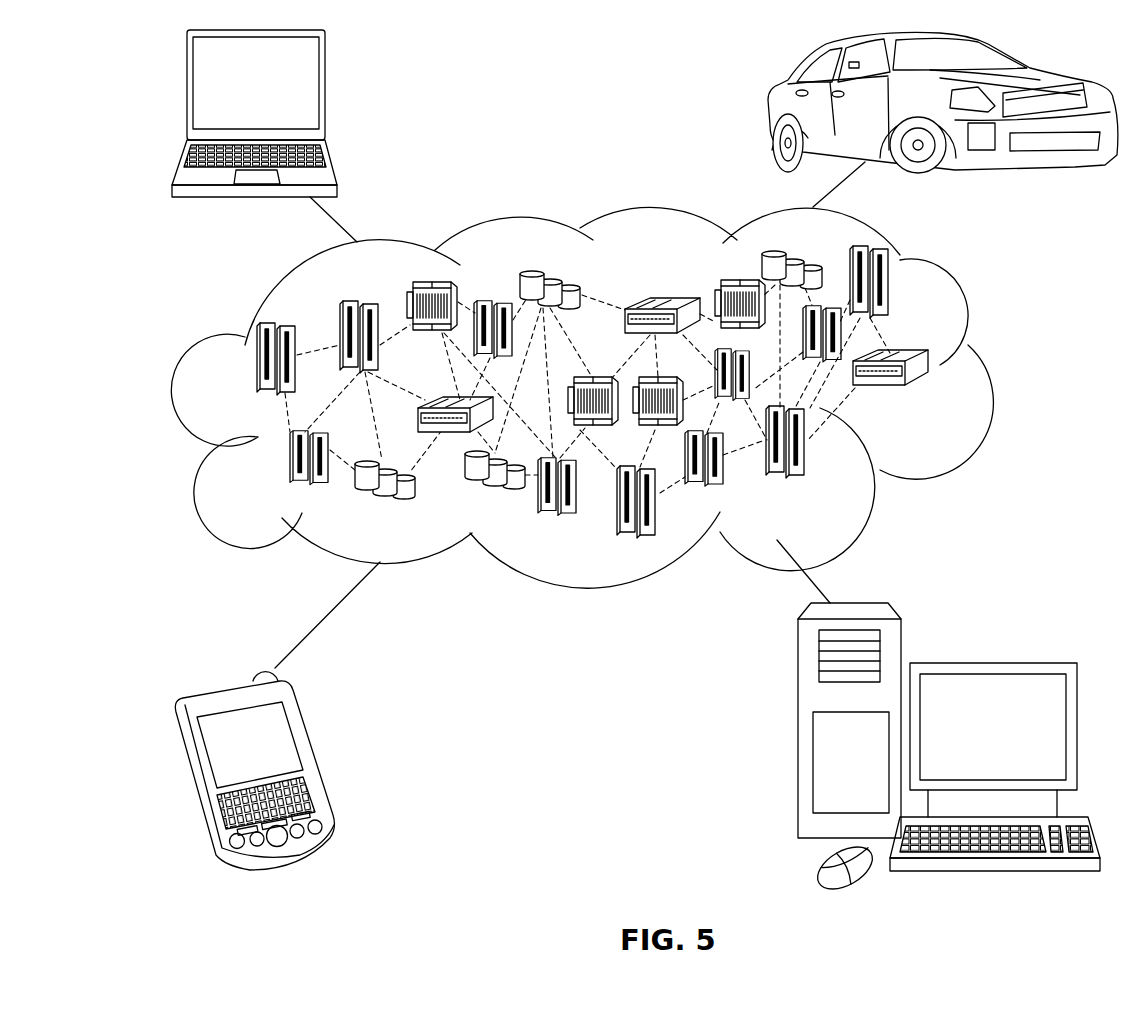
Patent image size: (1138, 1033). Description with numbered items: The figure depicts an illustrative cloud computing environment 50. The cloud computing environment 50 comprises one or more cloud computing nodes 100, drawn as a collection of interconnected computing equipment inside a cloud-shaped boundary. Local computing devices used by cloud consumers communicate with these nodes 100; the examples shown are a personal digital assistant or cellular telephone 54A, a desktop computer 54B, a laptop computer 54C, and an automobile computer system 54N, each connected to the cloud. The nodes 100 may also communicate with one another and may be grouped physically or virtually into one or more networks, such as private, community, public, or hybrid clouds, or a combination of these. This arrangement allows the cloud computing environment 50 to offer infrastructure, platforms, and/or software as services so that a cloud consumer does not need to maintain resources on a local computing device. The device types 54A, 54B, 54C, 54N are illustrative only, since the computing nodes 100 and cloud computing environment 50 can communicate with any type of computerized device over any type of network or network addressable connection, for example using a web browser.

The cloud computing environment 50 is at (990, 367).
The cloud computing nodes 100 is at (933, 400).
The personal digital assistant or cellular telephone 54A is at (318, 758).
The desktop computer 54B is at (990, 661).
The laptop computer 54C is at (325, 90).
The automobile computer system 54N is at (770, 108).